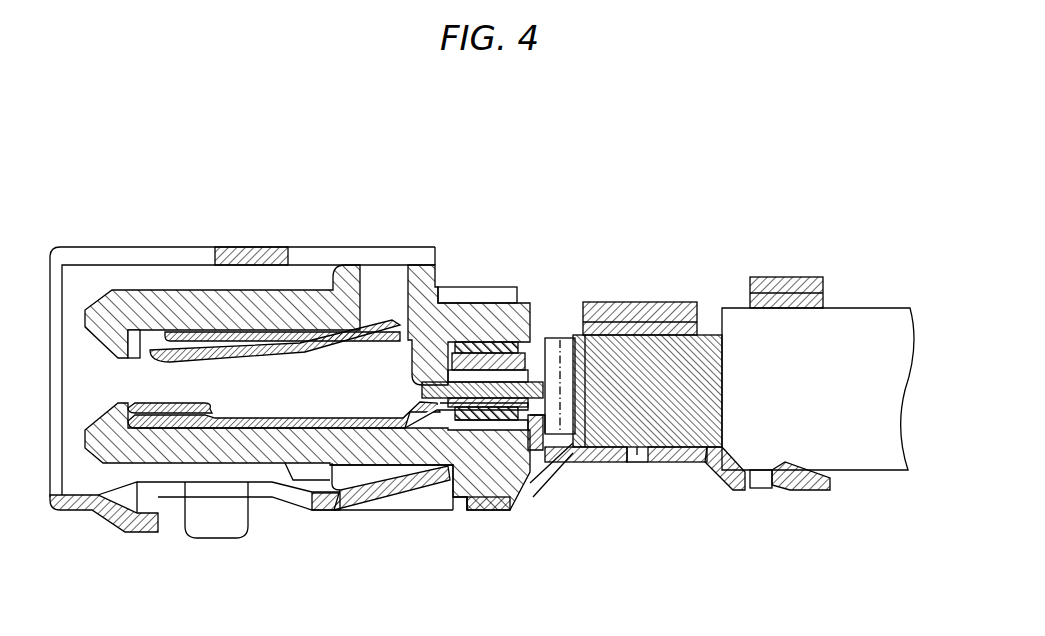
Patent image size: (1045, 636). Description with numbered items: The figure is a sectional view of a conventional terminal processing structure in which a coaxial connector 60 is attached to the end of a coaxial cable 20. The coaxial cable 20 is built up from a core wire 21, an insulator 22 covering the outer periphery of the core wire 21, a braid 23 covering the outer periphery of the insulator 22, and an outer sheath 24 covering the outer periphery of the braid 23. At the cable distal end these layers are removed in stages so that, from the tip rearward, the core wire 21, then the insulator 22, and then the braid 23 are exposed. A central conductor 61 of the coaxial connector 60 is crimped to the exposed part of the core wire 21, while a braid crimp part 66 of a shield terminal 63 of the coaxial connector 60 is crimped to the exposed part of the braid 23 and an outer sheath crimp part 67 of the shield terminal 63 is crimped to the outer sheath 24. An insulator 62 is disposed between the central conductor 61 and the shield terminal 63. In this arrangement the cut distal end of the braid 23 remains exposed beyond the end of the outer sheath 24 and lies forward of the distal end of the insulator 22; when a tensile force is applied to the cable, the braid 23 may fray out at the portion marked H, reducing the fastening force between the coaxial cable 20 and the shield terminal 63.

The coaxial connector 60 is at (338, 242).
The central conductor 61 is at (296, 440).
The insulator 62 is at (218, 497).
The shield terminal 63 is at (337, 508).
The core wire 21 is at (412, 402).
The insulator 22 is at (553, 442).
The braid 23 is at (639, 447).
The outer sheath 24 is at (866, 452).
The coaxial cable 20 is at (866, 308).
The braid crimp part 66 is at (641, 302).
The outer sheath crimp part 67 is at (776, 277).
The fraying portion H is at (560, 335).